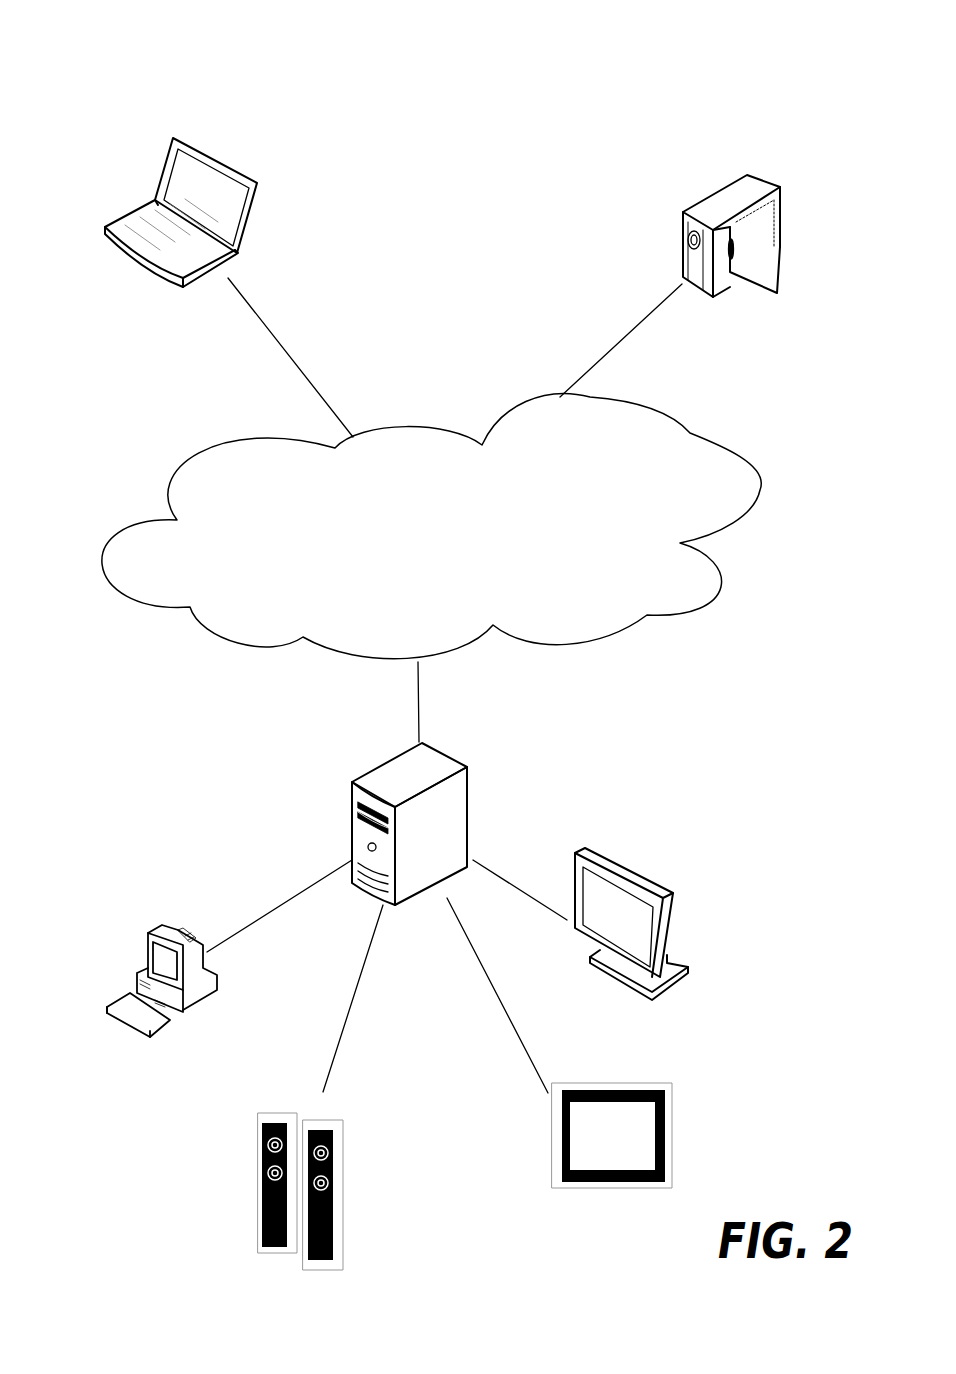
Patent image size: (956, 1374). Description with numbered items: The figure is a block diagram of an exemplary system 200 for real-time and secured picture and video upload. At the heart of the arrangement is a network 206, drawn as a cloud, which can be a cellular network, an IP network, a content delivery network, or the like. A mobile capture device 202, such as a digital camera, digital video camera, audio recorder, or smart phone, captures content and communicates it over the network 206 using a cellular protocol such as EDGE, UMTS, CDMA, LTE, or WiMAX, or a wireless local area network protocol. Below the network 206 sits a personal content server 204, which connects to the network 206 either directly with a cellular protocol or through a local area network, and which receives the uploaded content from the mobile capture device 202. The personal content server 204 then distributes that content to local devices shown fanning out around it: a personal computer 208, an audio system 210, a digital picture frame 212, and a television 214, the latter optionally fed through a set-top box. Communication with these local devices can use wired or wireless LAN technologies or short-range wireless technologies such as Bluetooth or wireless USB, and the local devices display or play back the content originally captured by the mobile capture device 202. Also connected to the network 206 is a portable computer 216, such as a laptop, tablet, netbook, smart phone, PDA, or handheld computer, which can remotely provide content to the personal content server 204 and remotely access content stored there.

The system 200 is at (310, 79).
The mobile capture device 202 is at (727, 188).
The personal content server 204 is at (370, 770).
The network 206 is at (409, 557).
The personal computer 208 is at (150, 933).
The audio system 210 is at (263, 1123).
The digital picture frame 212 is at (557, 1127).
The television 214 is at (595, 852).
The portable computer 216 is at (163, 173).